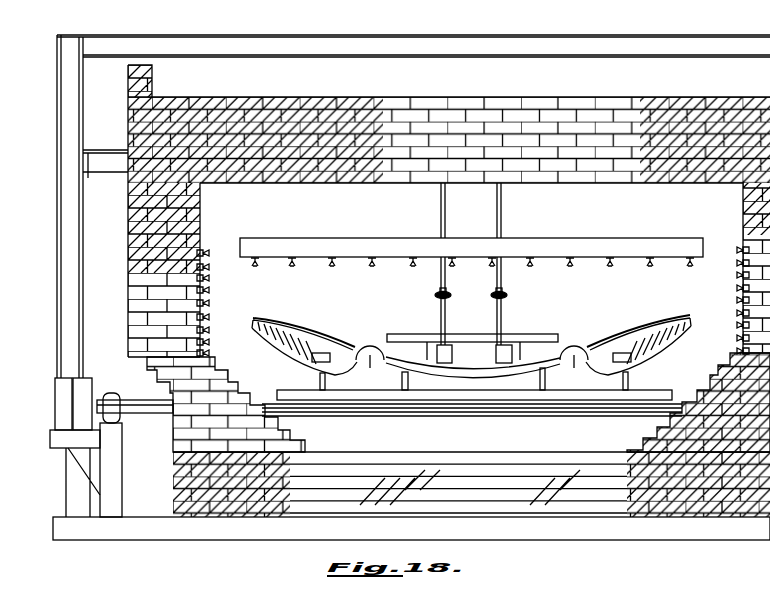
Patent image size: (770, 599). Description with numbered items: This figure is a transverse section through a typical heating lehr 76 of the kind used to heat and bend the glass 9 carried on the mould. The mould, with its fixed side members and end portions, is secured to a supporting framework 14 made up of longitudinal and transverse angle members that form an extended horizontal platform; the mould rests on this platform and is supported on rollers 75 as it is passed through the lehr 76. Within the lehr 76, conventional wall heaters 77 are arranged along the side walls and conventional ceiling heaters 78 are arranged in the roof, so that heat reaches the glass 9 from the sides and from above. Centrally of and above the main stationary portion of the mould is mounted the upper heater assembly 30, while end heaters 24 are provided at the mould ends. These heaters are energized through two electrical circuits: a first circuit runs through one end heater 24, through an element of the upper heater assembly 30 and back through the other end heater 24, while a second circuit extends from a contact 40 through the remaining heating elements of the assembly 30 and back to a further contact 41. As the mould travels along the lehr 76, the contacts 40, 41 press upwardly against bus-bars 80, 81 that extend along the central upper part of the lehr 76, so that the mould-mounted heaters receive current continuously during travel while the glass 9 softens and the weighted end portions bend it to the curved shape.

The heating lehr 76 is at (503, 100).
The ceiling heaters 78 is at (577, 238).
The wall heaters 77 is at (210, 300).
The bus-bar 81 is at (436, 296).
The bus-bar 80 is at (508, 296).
The contact 41 is at (441, 312).
The contact 40 is at (503, 313).
The upper heater assembly 30 is at (398, 334).
The end heater 24 is at (318, 350).
The glass 9 is at (674, 334).
The supporting framework 14 is at (285, 390).
The rollers 75 is at (338, 410).